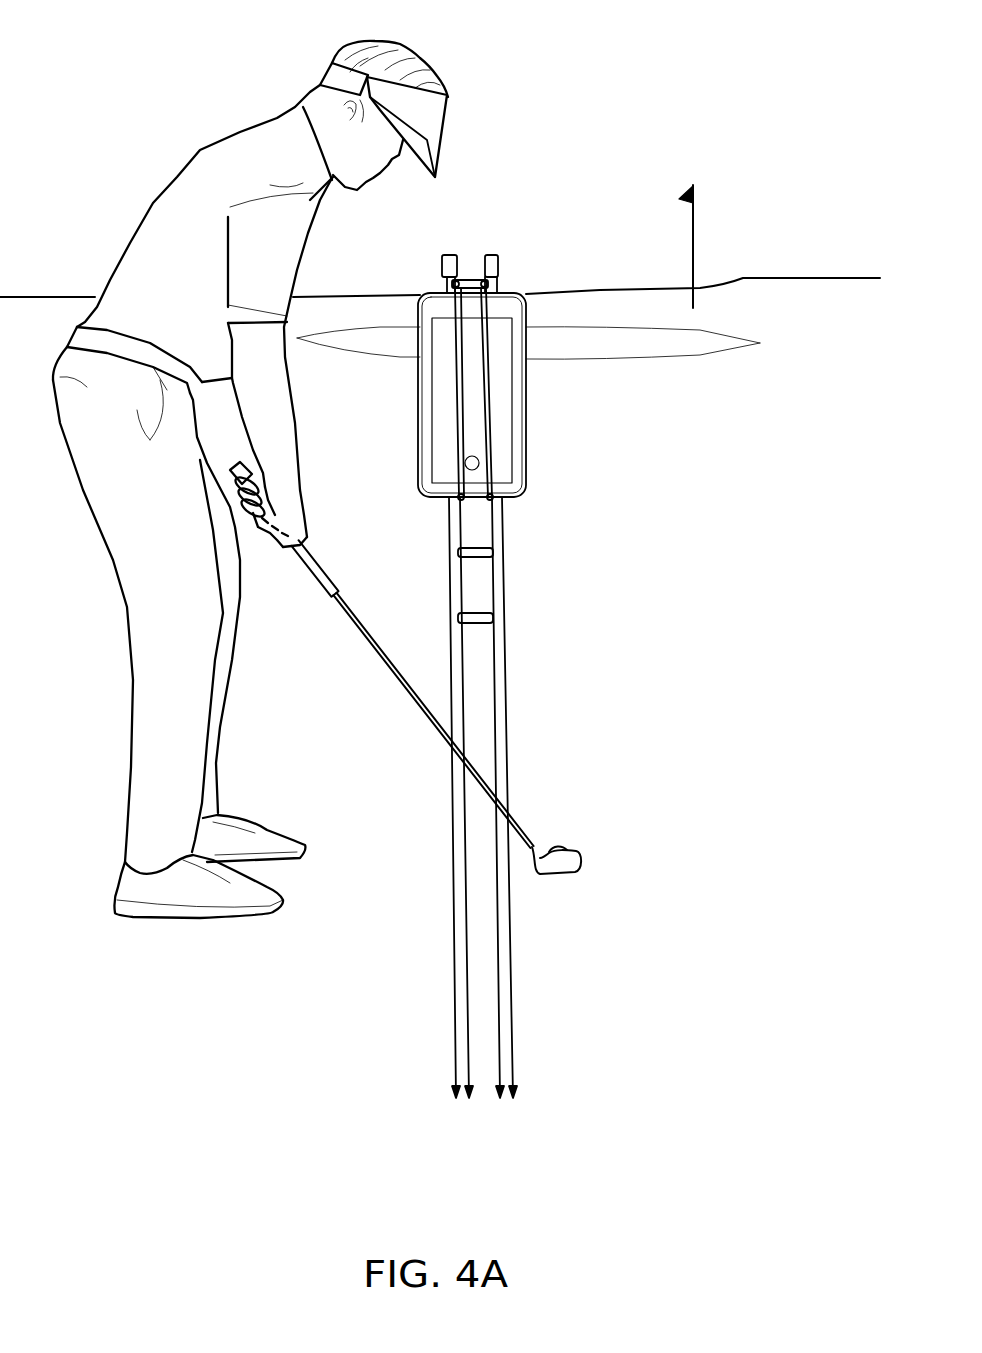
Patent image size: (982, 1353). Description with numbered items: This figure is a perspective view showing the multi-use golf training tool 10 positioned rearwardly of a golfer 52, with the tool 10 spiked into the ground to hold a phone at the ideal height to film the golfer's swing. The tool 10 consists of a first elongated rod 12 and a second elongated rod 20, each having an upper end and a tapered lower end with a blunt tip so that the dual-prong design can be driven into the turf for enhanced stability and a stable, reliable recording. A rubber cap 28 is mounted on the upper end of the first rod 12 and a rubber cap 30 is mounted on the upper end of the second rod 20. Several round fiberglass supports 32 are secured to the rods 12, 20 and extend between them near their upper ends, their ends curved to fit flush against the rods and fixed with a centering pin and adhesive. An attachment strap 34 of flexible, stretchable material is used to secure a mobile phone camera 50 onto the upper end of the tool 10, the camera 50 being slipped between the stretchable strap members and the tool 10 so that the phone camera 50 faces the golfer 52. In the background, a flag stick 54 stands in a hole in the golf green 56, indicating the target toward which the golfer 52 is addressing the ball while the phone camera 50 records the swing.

The multi-use golf training tool 10 is at (530, 595).
The first elongated rod 12 is at (456, 941).
The second elongated rod 20 is at (508, 747).
The rubber cap 28 is at (447, 255).
The rubber cap 30 is at (490, 255).
The round fiberglass support 32 is at (483, 620).
The attachment strap 34 is at (490, 378).
The mobile phone camera 50 is at (510, 438).
The golfer 52 is at (172, 172).
The flag stick 54 is at (695, 240).
The golf green 56 is at (748, 300).